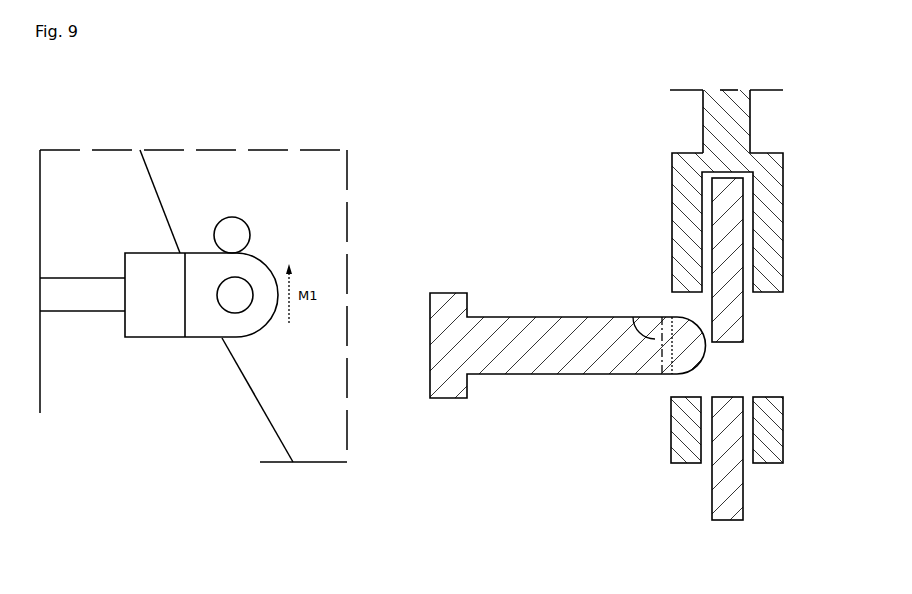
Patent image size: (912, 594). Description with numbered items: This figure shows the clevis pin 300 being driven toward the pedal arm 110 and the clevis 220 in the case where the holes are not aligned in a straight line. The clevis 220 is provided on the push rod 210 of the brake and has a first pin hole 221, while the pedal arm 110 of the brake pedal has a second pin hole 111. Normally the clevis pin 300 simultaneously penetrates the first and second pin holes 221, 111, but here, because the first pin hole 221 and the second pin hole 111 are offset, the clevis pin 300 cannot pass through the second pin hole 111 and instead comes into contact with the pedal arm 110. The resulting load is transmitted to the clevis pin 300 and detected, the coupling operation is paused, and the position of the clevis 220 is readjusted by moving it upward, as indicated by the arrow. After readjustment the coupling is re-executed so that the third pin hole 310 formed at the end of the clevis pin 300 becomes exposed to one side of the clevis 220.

The pedal arm 110 is at (318, 198).
The second pin hole 111 is at (246, 226).
The push rod 210 is at (90, 298).
The clevis 220 is at (198, 322).
The first pin hole 221 is at (252, 298).
The clevis pin 300 is at (532, 343).
The third pin hole 310 is at (633, 317).